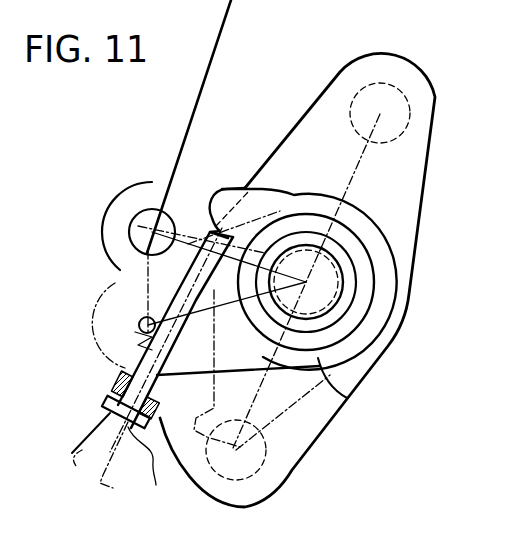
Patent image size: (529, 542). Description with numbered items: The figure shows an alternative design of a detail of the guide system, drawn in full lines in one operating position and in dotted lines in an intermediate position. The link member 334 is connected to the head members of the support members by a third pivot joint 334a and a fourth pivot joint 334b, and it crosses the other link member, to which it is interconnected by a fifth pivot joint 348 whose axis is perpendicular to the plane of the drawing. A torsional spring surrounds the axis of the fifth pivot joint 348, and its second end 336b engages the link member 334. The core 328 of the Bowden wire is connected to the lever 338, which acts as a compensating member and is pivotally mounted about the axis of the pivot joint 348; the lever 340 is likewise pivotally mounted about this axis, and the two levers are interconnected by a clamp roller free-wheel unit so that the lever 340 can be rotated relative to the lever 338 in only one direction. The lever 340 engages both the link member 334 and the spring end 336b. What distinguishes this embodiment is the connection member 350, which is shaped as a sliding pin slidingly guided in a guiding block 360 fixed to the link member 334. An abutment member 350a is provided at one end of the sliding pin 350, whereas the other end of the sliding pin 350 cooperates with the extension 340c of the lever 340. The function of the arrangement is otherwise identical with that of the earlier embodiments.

The core of the Bowden wire 328 is at (221, 38).
The link member 334 is at (400, 190).
The third pivot joint 334a is at (408, 112).
The fourth pivot joint 334b is at (290, 476).
The second end of the torsional spring 336b is at (145, 324).
The lever acting as compensating member 338 is at (118, 208).
The lever 340 is at (347, 397).
The extension of the lever 340c is at (236, 188).
The fifth pivot joint 348 is at (306, 282).
The connection member 350 is at (162, 349).
The abutment member 350a is at (116, 488).
The guiding block 360 is at (112, 384).